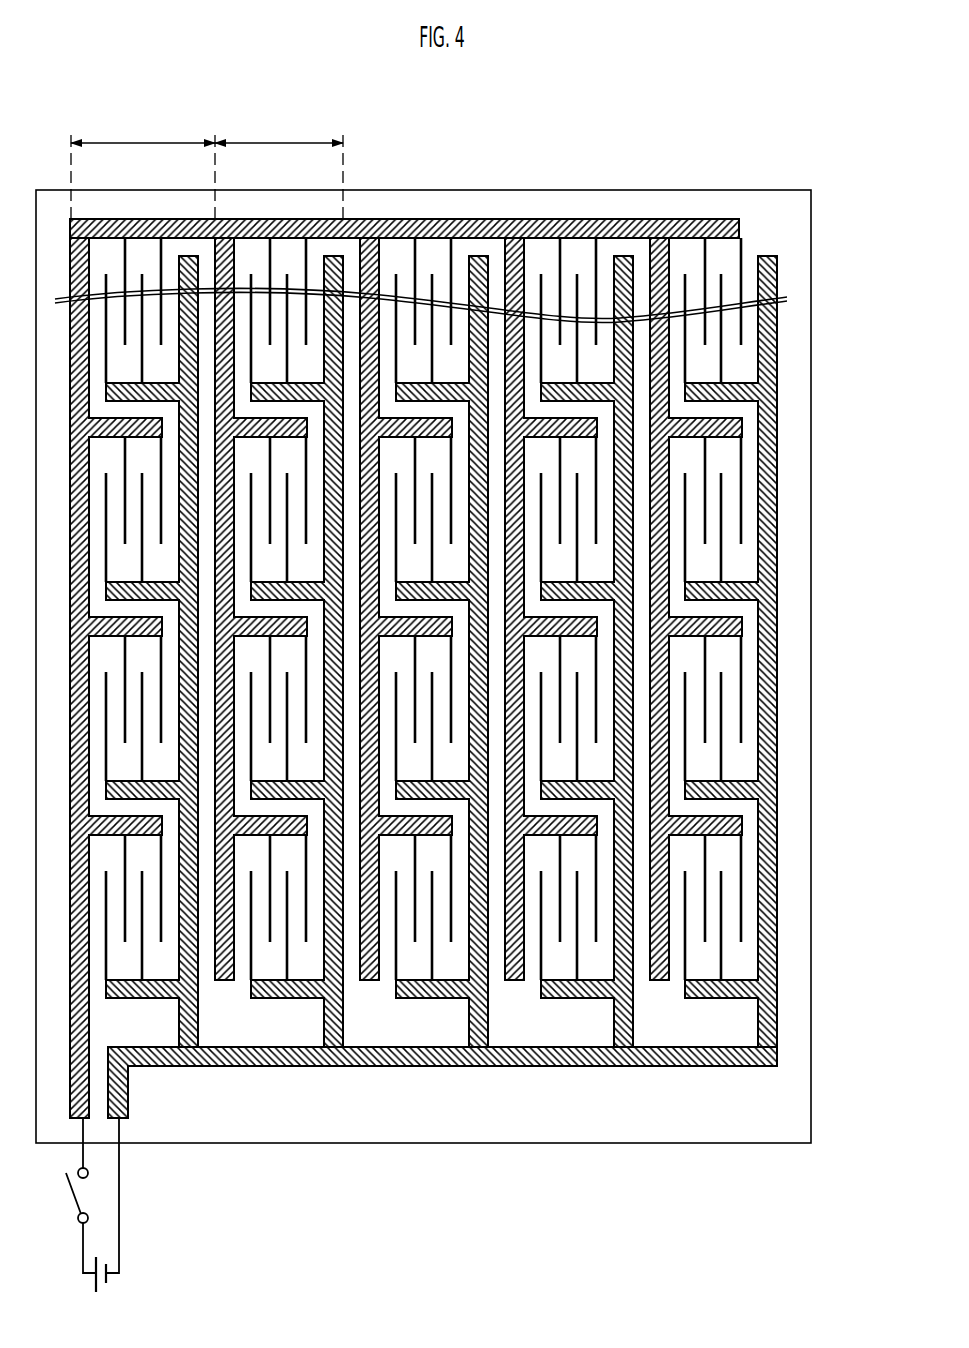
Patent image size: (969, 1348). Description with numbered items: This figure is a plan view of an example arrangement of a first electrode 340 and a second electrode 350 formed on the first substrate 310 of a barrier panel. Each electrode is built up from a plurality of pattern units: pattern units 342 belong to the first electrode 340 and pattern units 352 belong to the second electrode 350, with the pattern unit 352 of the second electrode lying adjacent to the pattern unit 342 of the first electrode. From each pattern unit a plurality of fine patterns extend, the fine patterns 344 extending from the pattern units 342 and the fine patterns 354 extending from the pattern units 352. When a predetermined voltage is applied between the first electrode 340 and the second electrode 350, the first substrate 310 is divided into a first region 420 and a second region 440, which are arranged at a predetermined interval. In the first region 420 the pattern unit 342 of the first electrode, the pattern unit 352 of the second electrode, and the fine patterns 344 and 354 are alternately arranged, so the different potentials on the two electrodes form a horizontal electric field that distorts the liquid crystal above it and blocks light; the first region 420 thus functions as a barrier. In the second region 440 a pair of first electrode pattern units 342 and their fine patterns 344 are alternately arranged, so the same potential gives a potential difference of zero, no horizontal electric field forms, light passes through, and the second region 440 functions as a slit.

The first substrate 310 is at (812, 1100).
The first electrode 340 is at (433, 220).
The pattern unit 342 is at (345, 323).
The fine pattern 344 is at (287, 323).
The second electrode 350 is at (375, 1066).
The pattern unit 352 is at (488, 963).
The fine pattern 354 is at (432, 950).
The first region 420 is at (143, 136).
The second region 440 is at (279, 136).